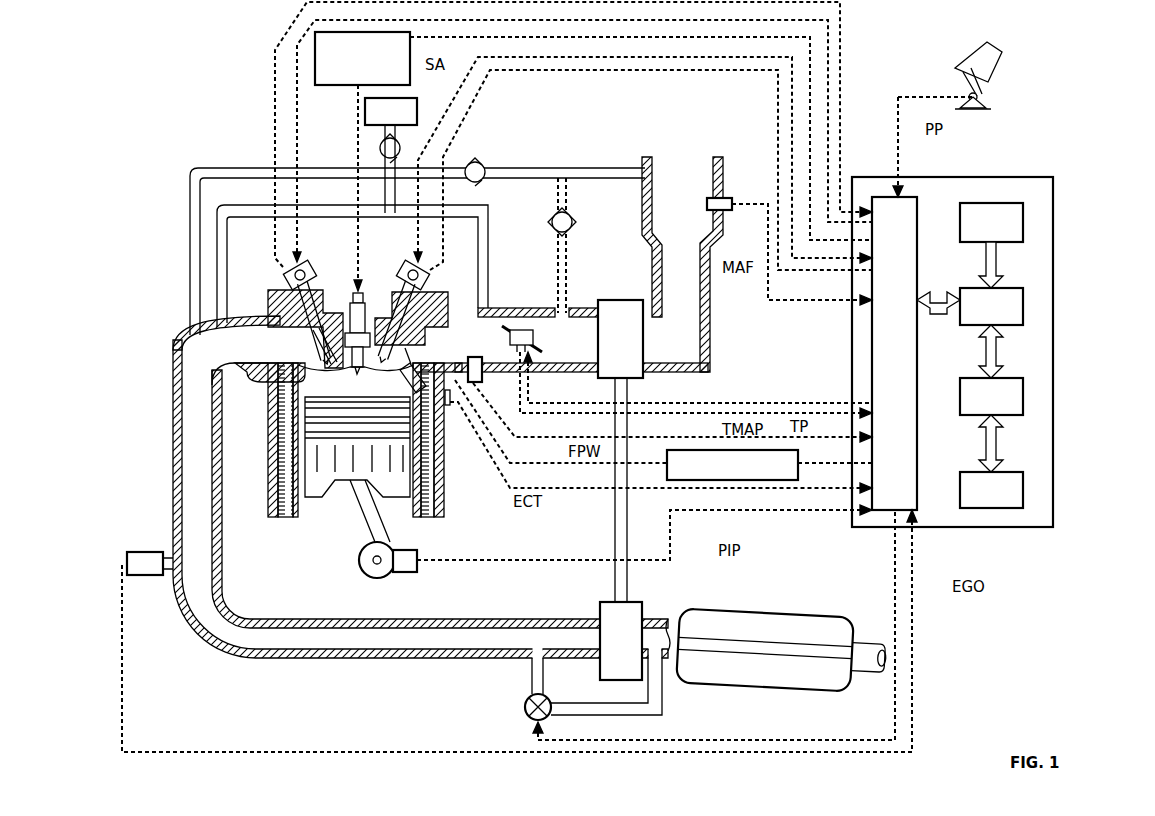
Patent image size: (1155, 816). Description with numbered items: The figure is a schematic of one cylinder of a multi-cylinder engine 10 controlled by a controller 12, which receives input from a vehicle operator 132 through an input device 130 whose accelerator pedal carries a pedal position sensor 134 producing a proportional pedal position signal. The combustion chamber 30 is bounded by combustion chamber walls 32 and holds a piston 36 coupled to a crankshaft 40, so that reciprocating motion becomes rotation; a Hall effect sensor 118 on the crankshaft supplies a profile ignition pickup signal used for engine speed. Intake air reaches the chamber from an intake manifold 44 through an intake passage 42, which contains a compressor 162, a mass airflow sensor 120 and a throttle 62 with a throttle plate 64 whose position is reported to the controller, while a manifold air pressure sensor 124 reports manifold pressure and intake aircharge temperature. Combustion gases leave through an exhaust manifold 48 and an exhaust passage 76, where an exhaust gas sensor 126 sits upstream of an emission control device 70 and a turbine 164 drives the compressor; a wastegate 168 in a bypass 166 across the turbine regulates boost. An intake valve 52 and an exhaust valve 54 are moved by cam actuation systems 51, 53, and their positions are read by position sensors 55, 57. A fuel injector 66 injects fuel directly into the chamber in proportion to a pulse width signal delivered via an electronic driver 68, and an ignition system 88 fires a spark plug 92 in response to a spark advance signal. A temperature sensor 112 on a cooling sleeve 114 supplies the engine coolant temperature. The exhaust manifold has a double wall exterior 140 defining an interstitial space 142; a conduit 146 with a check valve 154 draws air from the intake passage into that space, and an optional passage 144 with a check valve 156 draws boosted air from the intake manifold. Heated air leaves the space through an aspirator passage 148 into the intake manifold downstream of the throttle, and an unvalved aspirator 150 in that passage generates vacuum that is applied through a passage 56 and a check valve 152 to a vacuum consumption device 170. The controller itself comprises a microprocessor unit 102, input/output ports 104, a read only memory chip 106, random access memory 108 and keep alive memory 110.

The engine 10 is at (105, 270).
The controller 12 is at (1053, 177).
The combustion chamber 30 is at (355, 380).
The combustion chamber walls 32 is at (300, 500).
The piston 36 is at (342, 487).
The crankshaft 40 is at (368, 578).
The intake passage 42 is at (682, 264).
The intake manifold 44 is at (581, 340).
The exhaust manifold 48 is at (239, 350).
The cam actuation system 51 is at (418, 270).
The intake valve 52 is at (375, 318).
The cam actuation system 53 is at (297, 266).
The exhaust valve 54 is at (320, 355).
The position sensor 55 is at (430, 277).
The passage 56 is at (385, 196).
The position sensor 57 is at (284, 272).
The throttle 62 is at (525, 330).
The throttle plate 64 is at (503, 328).
The fuel injector 66 is at (415, 365).
The electronic driver 68 is at (732, 465).
The emission control device 70 is at (790, 613).
The exhaust passage 76 is at (335, 655).
The ignition system 88 is at (593, 136).
The spark plug 92 is at (352, 320).
The microprocessor unit 102 is at (1023, 310).
The input/output ports 104 is at (917, 205).
The read only memory chip 106 is at (1023, 222).
The random access memory 108 is at (1023, 395).
The keep alive memory 110 is at (1023, 490).
The temperature sensor 112 is at (450, 408).
The cooling sleeve 114 is at (426, 510).
The Hall effect sensor 118 is at (413, 574).
The mass airflow sensor 120 is at (725, 200).
The manifold air pressure sensor 124 is at (475, 355).
The exhaust gas sensor 126 is at (127, 556).
The input device 130 is at (958, 80).
The vehicle operator 132 is at (1000, 62).
The pedal position sensor 134 is at (985, 100).
The double wall exterior 140 is at (173, 385).
The interstitial space 142 is at (181, 358).
The passage 144 is at (556, 206).
The conduit 146 is at (210, 168).
The aspirator passage 148 is at (262, 206).
The aspirator 150 is at (380, 222).
The check valve 152 is at (380, 147).
The check valve 154 is at (478, 162).
The check valve 156 is at (568, 230).
The compressor 162 is at (604, 300).
The turbine 164 is at (600, 672).
The bypass 166 is at (665, 712).
The wastegate 168 is at (525, 710).
The vacuum consumption device 170 is at (391, 111).